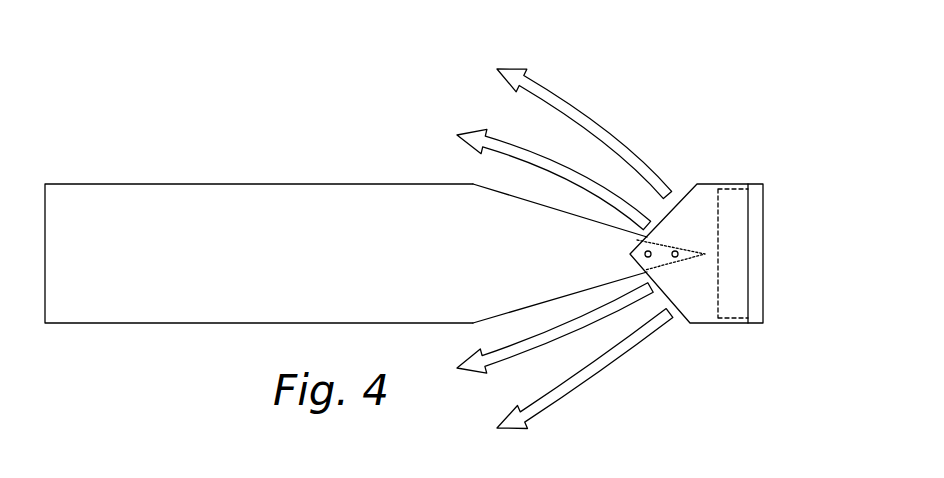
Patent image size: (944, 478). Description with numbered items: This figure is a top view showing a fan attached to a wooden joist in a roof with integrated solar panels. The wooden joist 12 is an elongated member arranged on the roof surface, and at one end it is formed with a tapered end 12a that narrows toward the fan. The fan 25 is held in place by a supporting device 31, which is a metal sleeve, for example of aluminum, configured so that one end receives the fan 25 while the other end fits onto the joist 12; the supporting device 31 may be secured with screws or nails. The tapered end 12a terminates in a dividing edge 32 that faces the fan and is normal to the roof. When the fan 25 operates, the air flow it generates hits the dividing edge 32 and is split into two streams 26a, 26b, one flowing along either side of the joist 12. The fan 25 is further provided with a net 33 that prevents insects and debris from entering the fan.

The joist 12 is at (132, 283).
The tapered end 12a is at (575, 243).
The supporting device 31 is at (692, 217).
The dividing edge 32 is at (705, 253).
The net 33 is at (760, 287).
The fan 25 is at (722, 295).
The stream 26a is at (580, 383).
The stream 26b is at (572, 110).